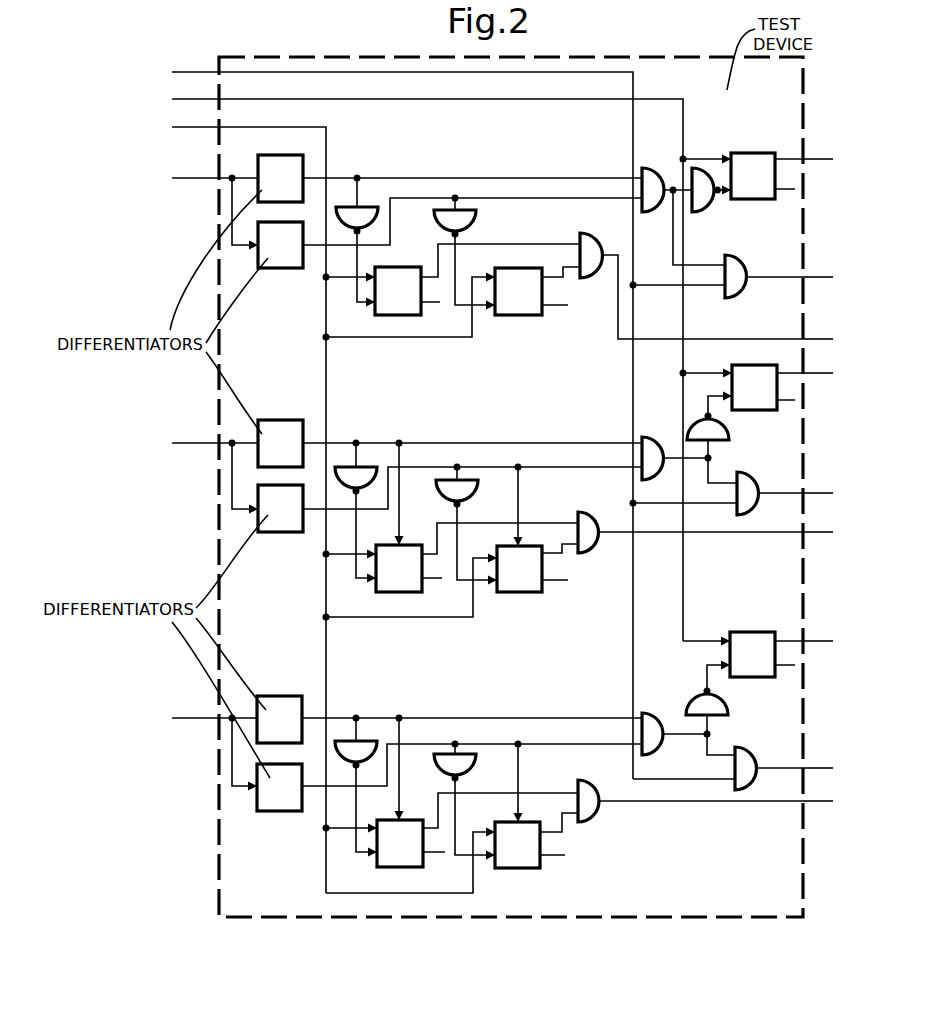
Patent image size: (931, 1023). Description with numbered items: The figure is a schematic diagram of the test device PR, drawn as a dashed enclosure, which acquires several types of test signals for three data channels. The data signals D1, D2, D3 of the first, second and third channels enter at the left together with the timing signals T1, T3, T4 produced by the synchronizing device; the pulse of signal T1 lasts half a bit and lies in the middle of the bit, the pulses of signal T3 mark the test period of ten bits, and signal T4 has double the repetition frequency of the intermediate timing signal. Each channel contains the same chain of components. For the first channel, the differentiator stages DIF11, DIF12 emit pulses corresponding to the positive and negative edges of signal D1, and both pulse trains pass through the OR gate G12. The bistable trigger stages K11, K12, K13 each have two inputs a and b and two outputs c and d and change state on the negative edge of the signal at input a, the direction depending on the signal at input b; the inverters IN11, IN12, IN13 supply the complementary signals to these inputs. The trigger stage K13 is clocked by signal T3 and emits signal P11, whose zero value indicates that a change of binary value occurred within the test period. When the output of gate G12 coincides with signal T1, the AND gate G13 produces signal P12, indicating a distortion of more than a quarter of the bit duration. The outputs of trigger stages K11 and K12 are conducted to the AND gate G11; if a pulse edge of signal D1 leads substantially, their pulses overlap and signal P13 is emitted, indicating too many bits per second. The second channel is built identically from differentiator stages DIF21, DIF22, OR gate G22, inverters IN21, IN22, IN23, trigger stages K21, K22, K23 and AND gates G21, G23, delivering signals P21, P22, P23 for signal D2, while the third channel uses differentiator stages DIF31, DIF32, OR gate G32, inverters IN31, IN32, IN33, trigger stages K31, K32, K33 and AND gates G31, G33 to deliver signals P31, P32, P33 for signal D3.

The test device PR is at (657, 58).
The signal T1 is at (402, 410).
The signal T3 is at (427, 356).
The signal T4 is at (249, 496).
The signal D1 is at (407, 199).
The signal D2 is at (407, 465).
The signal D3 is at (407, 741).
The differentiator stage DIF11 is at (288, 153).
The differentiator stage DIF12 is at (283, 268).
The differentiator stage DIF21 is at (288, 418).
The differentiator stage DIF22 is at (283, 532).
The differentiator stage DIF31 is at (287, 694).
The differentiator stage DIF32 is at (282, 811).
The inverter IN11 is at (367, 213).
The inverter IN12 is at (467, 213).
The inverter IN13 is at (708, 212).
The inverter IN21 is at (364, 477).
The inverter IN22 is at (462, 483).
The inverter IN23 is at (720, 430).
The inverter IN31 is at (373, 748).
The inverter IN32 is at (463, 757).
The inverter IN33 is at (718, 707).
The bistable trigger stage K11 is at (452, 279).
The bistable trigger stage K12 is at (452, 296).
The bistable trigger stage K13 is at (742, 166).
The bistable trigger stage K21 is at (451, 517).
The bistable trigger stage K22 is at (451, 544).
The bistable trigger stage K23 is at (742, 377).
The bistable trigger stage K31 is at (451, 805).
The bistable trigger stage K32 is at (452, 818).
The bistable trigger stage K33 is at (743, 646).
The AND gate G11 is at (603, 233).
The OR gate G12 is at (681, 216).
The AND gate G13 is at (740, 270).
The AND gate G21 is at (600, 510).
The OR gate G22 is at (687, 444).
The AND gate G23 is at (760, 476).
The AND gate G31 is at (596, 779).
The OR gate G32 is at (686, 719).
The AND gate G33 is at (763, 752).
The signal P11 is at (818, 143).
The signal P12 is at (818, 263).
The signal P13 is at (818, 324).
The signal P21 is at (818, 359).
The signal P22 is at (818, 483).
The signal P23 is at (818, 524).
The signal P31 is at (818, 628).
The signal P32 is at (818, 758).
The signal P33 is at (818, 793).